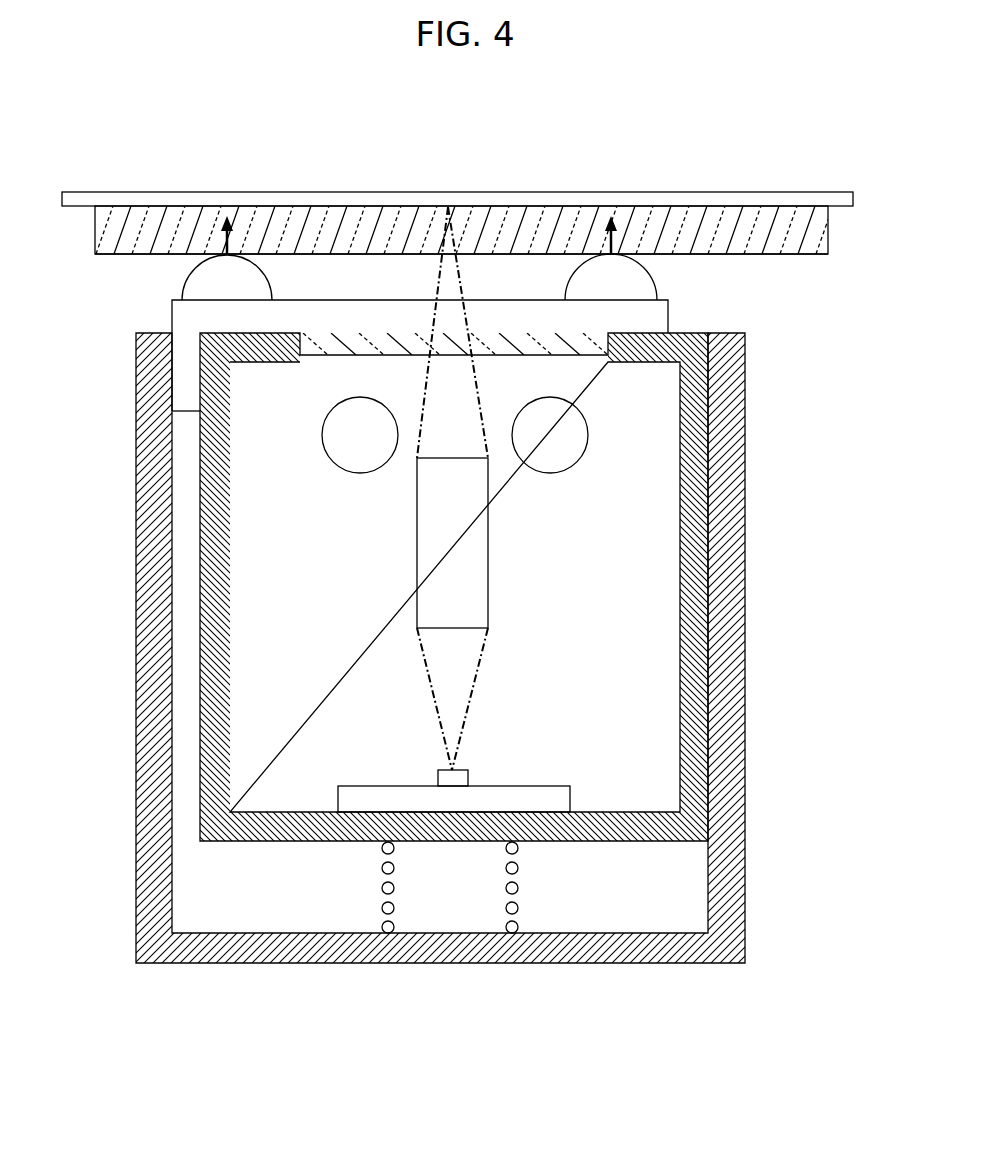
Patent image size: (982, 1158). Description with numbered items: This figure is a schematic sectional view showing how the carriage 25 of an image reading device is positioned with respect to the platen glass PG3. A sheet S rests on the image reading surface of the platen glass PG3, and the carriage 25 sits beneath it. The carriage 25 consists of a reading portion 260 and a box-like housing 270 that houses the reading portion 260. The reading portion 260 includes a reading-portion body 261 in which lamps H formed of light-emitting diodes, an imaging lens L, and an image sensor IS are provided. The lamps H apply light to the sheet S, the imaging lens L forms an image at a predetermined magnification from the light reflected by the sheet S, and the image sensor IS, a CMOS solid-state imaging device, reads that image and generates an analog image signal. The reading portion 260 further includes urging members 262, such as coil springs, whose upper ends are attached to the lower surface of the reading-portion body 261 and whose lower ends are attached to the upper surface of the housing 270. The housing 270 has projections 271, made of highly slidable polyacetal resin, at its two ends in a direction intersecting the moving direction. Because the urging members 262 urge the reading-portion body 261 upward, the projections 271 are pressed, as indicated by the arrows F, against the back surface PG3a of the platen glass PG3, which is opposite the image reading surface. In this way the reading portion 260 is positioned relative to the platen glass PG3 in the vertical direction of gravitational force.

The sheet S is at (507, 200).
The platen glass PG3 is at (195, 215).
The back surface PG3a is at (385, 253).
The arrows F is at (428, 235).
The projections 271 is at (202, 280).
The housing 270 is at (153, 590).
The carriage 25 is at (772, 350).
The reading portion 260 is at (626, 852).
The reading-portion body 261 is at (203, 690).
The urging members 262 is at (382, 868).
The lamps H is at (357, 450).
The imaging lens L is at (413, 538).
The image sensor IS is at (457, 778).